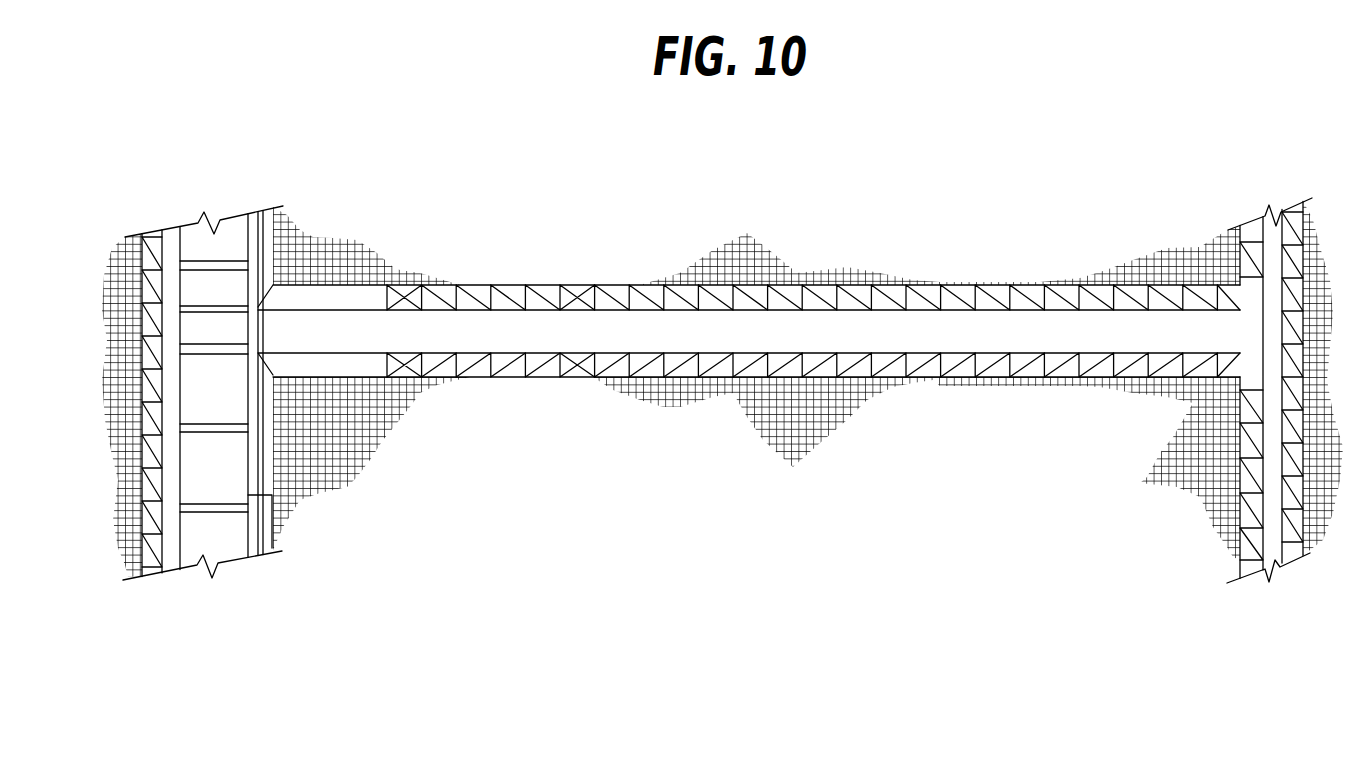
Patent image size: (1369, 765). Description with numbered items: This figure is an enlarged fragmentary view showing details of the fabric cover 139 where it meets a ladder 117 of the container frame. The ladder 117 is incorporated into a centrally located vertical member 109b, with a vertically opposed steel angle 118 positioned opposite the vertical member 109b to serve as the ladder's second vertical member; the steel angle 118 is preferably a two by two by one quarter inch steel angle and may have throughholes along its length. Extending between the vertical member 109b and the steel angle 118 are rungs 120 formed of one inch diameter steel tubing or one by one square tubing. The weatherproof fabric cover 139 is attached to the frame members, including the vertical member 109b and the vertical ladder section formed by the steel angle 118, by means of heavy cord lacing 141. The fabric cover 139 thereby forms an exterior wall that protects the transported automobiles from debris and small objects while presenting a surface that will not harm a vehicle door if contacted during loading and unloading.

The vertical member 109b is at (170, 535).
The ladder 117 is at (220, 520).
The steel angle 118 is at (257, 532).
The rungs 120 is at (230, 262).
The fabric cover 139 is at (995, 495).
The cord lacing 141 is at (643, 283).